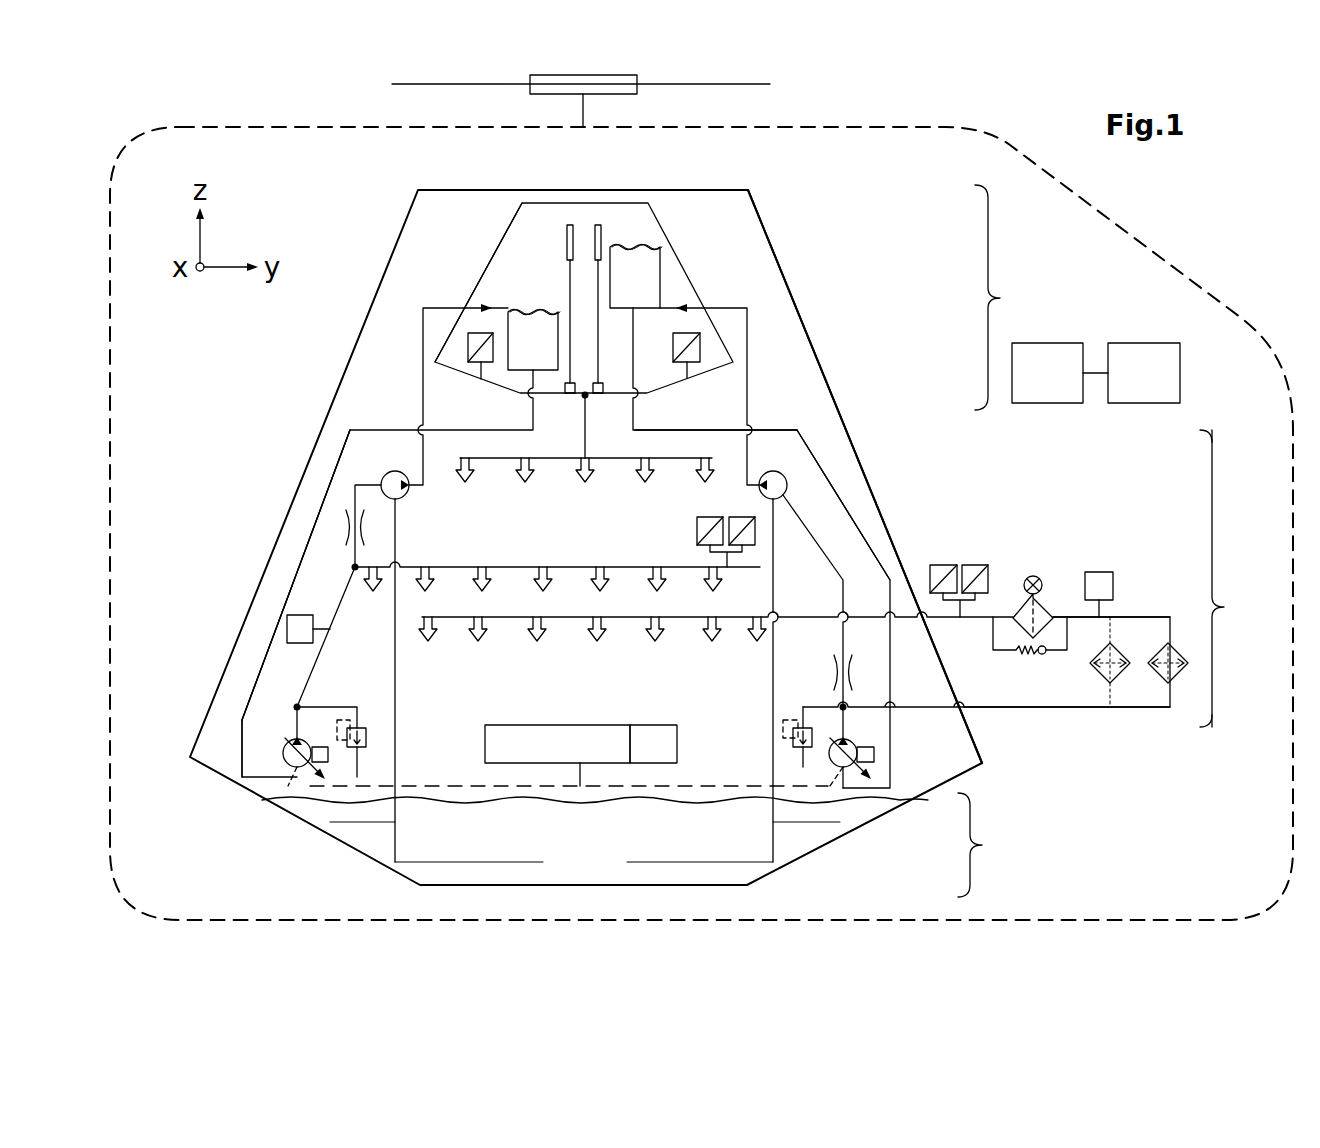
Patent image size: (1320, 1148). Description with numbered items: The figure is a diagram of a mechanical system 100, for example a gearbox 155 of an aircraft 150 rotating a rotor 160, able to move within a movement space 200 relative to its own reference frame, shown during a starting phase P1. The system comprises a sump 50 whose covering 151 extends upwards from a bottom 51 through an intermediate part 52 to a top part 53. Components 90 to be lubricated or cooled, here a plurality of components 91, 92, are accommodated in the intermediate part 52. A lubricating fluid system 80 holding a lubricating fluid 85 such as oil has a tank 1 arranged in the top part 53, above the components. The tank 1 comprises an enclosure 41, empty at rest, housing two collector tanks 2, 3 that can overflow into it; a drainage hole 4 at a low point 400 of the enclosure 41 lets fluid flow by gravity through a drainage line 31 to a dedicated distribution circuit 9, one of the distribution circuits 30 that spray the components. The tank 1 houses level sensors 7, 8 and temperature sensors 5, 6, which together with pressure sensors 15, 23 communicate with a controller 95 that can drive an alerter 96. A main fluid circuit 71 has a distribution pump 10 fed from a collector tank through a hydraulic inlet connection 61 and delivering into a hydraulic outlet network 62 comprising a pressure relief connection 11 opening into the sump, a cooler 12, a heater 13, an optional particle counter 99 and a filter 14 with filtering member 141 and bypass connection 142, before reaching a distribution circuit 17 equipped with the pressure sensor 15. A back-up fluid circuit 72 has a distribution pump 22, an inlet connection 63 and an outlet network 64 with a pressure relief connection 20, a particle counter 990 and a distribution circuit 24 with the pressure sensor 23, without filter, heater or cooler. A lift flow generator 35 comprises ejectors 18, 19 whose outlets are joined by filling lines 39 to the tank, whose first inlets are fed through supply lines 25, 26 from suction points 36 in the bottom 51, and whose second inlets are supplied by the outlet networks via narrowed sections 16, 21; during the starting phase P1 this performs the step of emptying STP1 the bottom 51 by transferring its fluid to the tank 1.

The tank 1 is at (522, 203).
The collector tank 2 is at (642, 277).
The collector tank 3 is at (525, 327).
The drainage hole 4 is at (513, 425).
The low point 400 is at (585, 397).
The temperature sensor 5 is at (700, 343).
The temperature sensor 6 is at (467, 343).
The lubricating fluid level sensor 7 is at (570, 225).
The lubricating fluid level sensor 8 is at (598, 225).
The dedicated distribution circuit 9 is at (716, 418).
The distribution pump 10 is at (850, 742).
The pressure relief connection 11 is at (785, 713).
The cooler 12 is at (1180, 673).
The heater 13 is at (1120, 673).
The filter 14 is at (1038, 585).
The filtering member 141 is at (1040, 600).
The bypass connection 142 is at (1055, 652).
The pressure sensor 15 is at (990, 578).
The narrowed section 16 is at (837, 680).
The distribution circuit 17 is at (812, 615).
The ejector 18 is at (872, 603).
The ejector 19 is at (315, 643).
The pressure relief connection 20 is at (367, 745).
The narrowed section 21 is at (343, 528).
The distribution pump 22 is at (283, 753).
The pressure sensor 23 is at (695, 537).
The distribution circuit 24 is at (447, 567).
The supply line 25 is at (507, 862).
The supply line 26 is at (682, 862).
The distribution circuit 30 is at (683, 456).
The drainage line 31 is at (578, 432).
The lift flow generator 35 is at (390, 472).
The suction point 36 is at (333, 822).
The filling line 39 is at (422, 387).
The enclosure 41 is at (480, 245).
The sump 50 is at (263, 575).
The bottom 51 is at (990, 845).
The intermediate part 52 is at (1236, 578).
The top part 53 is at (1010, 297).
The hydraulic inlet connection 61 is at (820, 468).
The hydraulic outlet network 62 is at (1172, 595).
The hydraulic inlet connection 63 is at (300, 615).
The hydraulic outlet network 64 is at (352, 647).
The main fluid circuit 71 is at (1035, 725).
The back-up fluid circuit 72 is at (236, 694).
The lubricating fluid system 80 is at (368, 400).
The lubricating fluid 85 is at (525, 307).
The component to be lubricated or cooled 90 is at (557, 717).
The component to be lubricated or cooled 91 is at (560, 725).
The component to be lubricated or cooled 92 is at (650, 725).
The controller 95 is at (1060, 373).
The alerter 96 is at (1144, 373).
The particle counter 99 is at (1100, 572).
The mechanical system 100 is at (560, 537).
The aircraft 150 is at (1200, 267).
The covering 151 is at (880, 503).
The gearbox 155 is at (232, 507).
The rotor 160 is at (492, 104).
The movement space 200 is at (327, 127).
The particle counter 990 is at (242, 613).
The starting phase P1 is at (302, 538).
The step of emptying STP1 is at (773, 470).